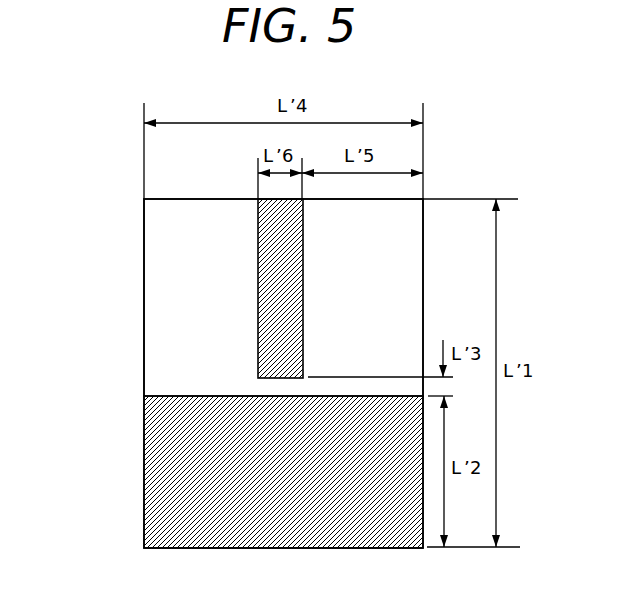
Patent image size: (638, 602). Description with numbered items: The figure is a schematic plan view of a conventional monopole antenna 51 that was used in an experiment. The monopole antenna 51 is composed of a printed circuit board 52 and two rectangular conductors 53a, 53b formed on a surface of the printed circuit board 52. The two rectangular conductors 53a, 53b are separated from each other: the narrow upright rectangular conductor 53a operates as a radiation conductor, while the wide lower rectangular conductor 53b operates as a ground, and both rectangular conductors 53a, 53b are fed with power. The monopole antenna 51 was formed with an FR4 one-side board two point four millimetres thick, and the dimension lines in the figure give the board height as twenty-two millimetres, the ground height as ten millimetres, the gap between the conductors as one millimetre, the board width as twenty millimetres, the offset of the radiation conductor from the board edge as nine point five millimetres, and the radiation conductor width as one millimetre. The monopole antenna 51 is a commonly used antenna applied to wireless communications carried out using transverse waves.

The monopole antenna 51 is at (492, 146).
The printed circuit board 52 is at (152, 233).
The rectangular conductor 53a is at (270, 321).
The rectangular conductor 53b is at (162, 472).